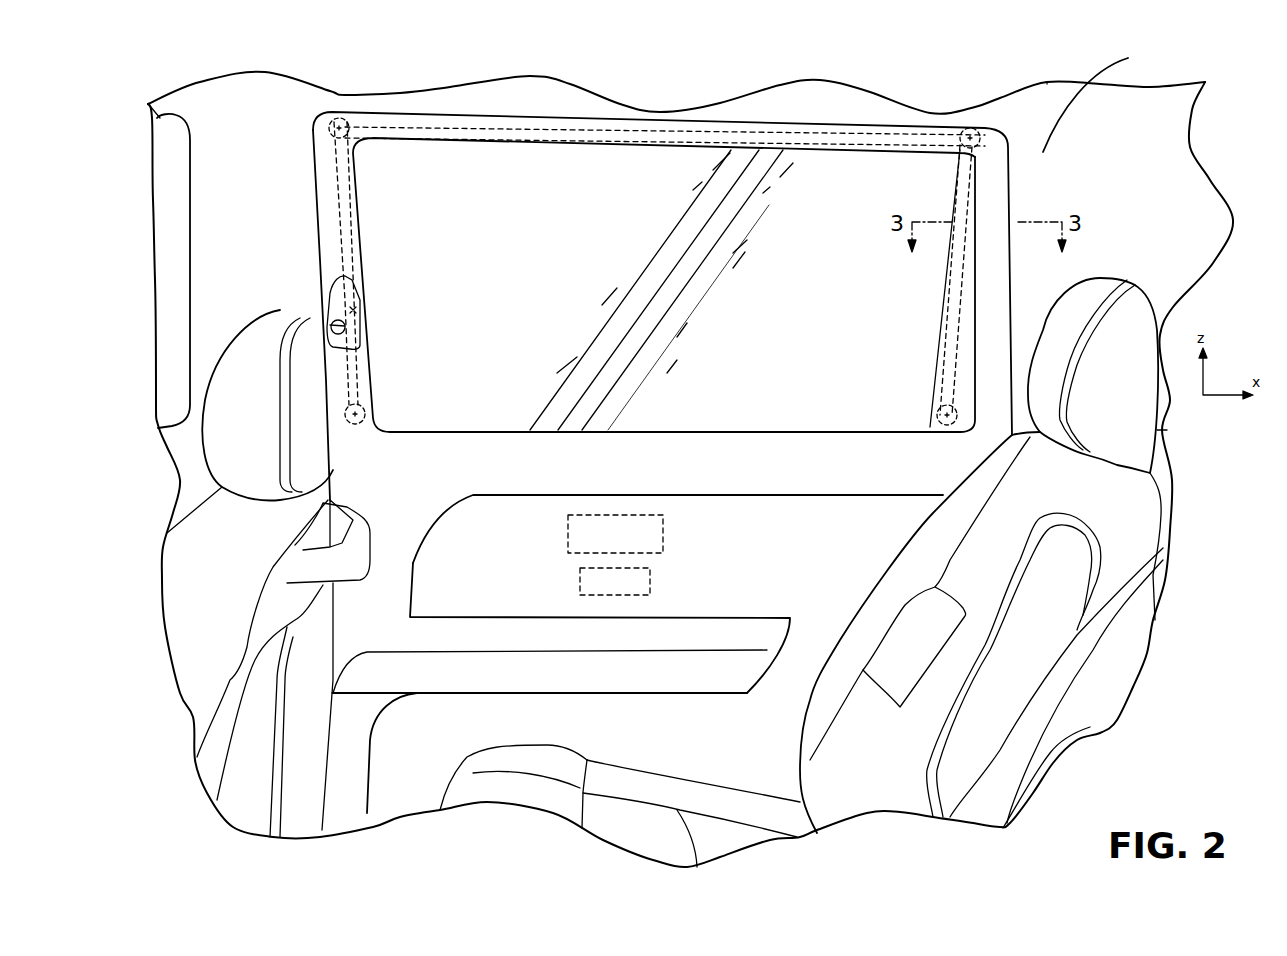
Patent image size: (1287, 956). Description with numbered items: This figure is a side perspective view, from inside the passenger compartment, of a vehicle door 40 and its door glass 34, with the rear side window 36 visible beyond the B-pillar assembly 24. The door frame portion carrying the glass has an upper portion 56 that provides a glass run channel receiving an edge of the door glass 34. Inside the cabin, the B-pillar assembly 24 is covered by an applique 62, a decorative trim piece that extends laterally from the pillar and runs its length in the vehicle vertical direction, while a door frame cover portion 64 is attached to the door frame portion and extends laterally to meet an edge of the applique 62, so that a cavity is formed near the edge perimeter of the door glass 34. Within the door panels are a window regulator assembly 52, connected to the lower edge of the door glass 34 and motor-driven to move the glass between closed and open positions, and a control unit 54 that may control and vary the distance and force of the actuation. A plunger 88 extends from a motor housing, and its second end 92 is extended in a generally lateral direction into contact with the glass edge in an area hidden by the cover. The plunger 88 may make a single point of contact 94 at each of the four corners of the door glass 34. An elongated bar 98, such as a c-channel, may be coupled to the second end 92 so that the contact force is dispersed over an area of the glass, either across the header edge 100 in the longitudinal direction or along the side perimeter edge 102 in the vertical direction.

The B-pillar assembly 24 is at (1052, 70).
The door glass 34 is at (547, 258).
The rear side window 36 is at (1185, 245).
The vehicle door 40 is at (377, 822).
The window regulator assembly 52 is at (660, 535).
The control unit 54 is at (650, 583).
The upper portion 56 is at (858, 128).
The applique 62 is at (1099, 100).
The door frame cover portion 64 is at (978, 292).
The plunger 88 is at (332, 333).
The second end 92 is at (353, 330).
The point of contact 94 is at (341, 118).
The bar 98 is at (353, 313).
The header edge 100 is at (647, 128).
The side perimeter edge 102 is at (333, 210).